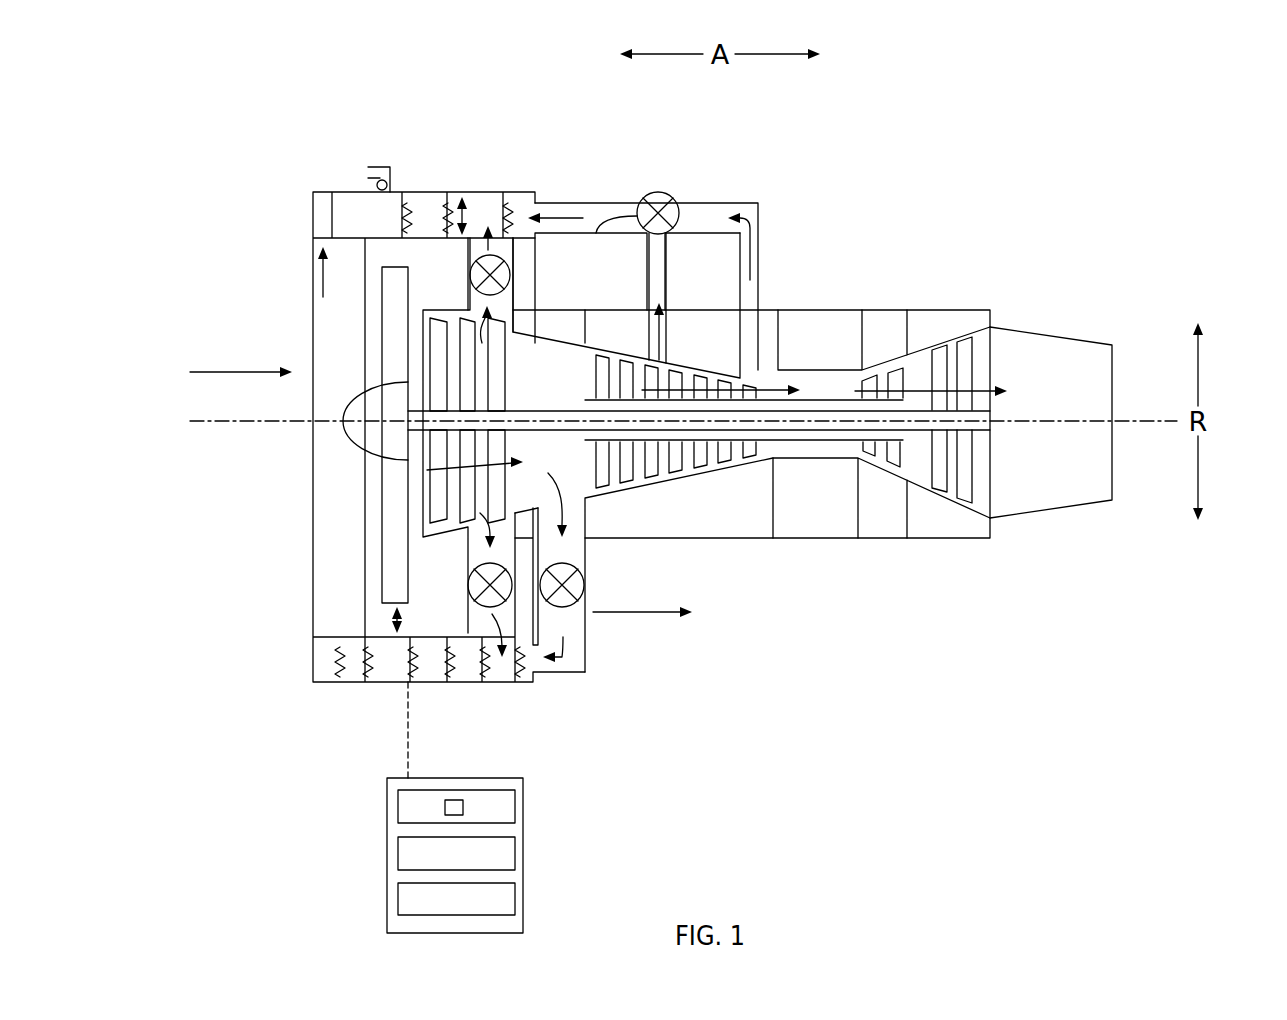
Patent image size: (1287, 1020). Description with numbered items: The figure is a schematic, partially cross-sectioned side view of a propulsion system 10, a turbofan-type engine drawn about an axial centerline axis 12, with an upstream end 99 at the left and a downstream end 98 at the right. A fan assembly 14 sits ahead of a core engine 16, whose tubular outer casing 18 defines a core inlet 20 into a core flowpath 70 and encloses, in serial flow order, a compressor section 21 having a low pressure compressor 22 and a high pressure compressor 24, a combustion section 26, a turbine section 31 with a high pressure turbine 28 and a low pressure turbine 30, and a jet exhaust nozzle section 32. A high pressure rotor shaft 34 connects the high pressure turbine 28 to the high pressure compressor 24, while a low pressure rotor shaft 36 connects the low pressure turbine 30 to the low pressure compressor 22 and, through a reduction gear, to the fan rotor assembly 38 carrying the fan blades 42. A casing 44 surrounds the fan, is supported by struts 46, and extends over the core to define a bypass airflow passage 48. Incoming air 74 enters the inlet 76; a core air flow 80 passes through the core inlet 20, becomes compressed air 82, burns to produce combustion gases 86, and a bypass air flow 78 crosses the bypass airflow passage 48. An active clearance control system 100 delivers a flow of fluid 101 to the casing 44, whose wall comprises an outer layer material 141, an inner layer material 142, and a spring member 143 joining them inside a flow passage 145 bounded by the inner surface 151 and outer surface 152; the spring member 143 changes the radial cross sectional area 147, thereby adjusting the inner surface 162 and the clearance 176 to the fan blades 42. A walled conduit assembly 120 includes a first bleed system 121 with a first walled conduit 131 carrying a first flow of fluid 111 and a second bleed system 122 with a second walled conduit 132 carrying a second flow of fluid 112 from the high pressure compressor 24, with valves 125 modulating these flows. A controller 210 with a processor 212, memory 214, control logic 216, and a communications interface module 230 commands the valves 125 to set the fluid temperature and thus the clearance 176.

The propulsion system 10 is at (918, 105).
The axial centerline axis 12 is at (205, 421).
The fan assembly 14 is at (516, 705).
The core engine 16 is at (709, 568).
The outer casing 18 is at (785, 540).
The core inlet 20 is at (417, 540).
The compressor section 21 is at (639, 505).
The low pressure compressor 22 is at (545, 300).
The high pressure compressor 24 is at (638, 302).
The combustion section 26 is at (802, 297).
The high pressure turbine 28 is at (885, 290).
The low pressure turbine 30 is at (958, 290).
The turbine section 31 is at (901, 496).
The jet exhaust nozzle section 32 is at (1048, 312).
The high pressure rotor shaft 34 is at (835, 443).
The low pressure rotor shaft 36 is at (918, 430).
The fan rotor assembly 38 is at (342, 387).
The fan blades 42 is at (398, 290).
The casing 44 is at (486, 161).
The outlet guide vanes or struts 46 is at (467, 580).
The bypass airflow passage 48 is at (433, 299).
The core flowpath 70 is at (534, 401).
The flow of air 74 is at (228, 372).
The inlet 76 is at (365, 557).
The bypass air flow 78 is at (638, 617).
The core air flow 80 is at (482, 462).
The compressed air 82 is at (767, 388).
The combustion gases 86 is at (978, 388).
The downstream end 98 is at (1257, 436).
The upstream end 99 is at (196, 491).
The active clearance control system 100 is at (600, 109).
The flow of fluid 101 is at (558, 218).
The first flow of fluid 111 is at (483, 330).
The second flow of fluid 112 is at (668, 340).
The walled conduit assembly 120 is at (637, 180).
The first bleed system 121 is at (604, 680).
The second bleed system 122 is at (750, 180).
The valves 125 is at (600, 640).
The first walled conduit 131 is at (380, 165).
The second walled conduit 132 is at (718, 203).
The outer layer material 141 is at (353, 192).
The inner layer material 142 is at (343, 240).
The spring member 143 is at (406, 200).
The flow passage 145 is at (413, 231).
The radial cross sectional area 147 is at (470, 218).
The inner surface 151 is at (340, 208).
The outer surface 152 is at (353, 224).
The inner surface 162 is at (335, 286).
The clearance 176 is at (360, 626).
The controller 210 is at (495, 933).
The processor 212 is at (498, 853).
The memory 214 is at (502, 808).
The control logic 216 is at (445, 808).
The communications interface module 230 is at (495, 903).